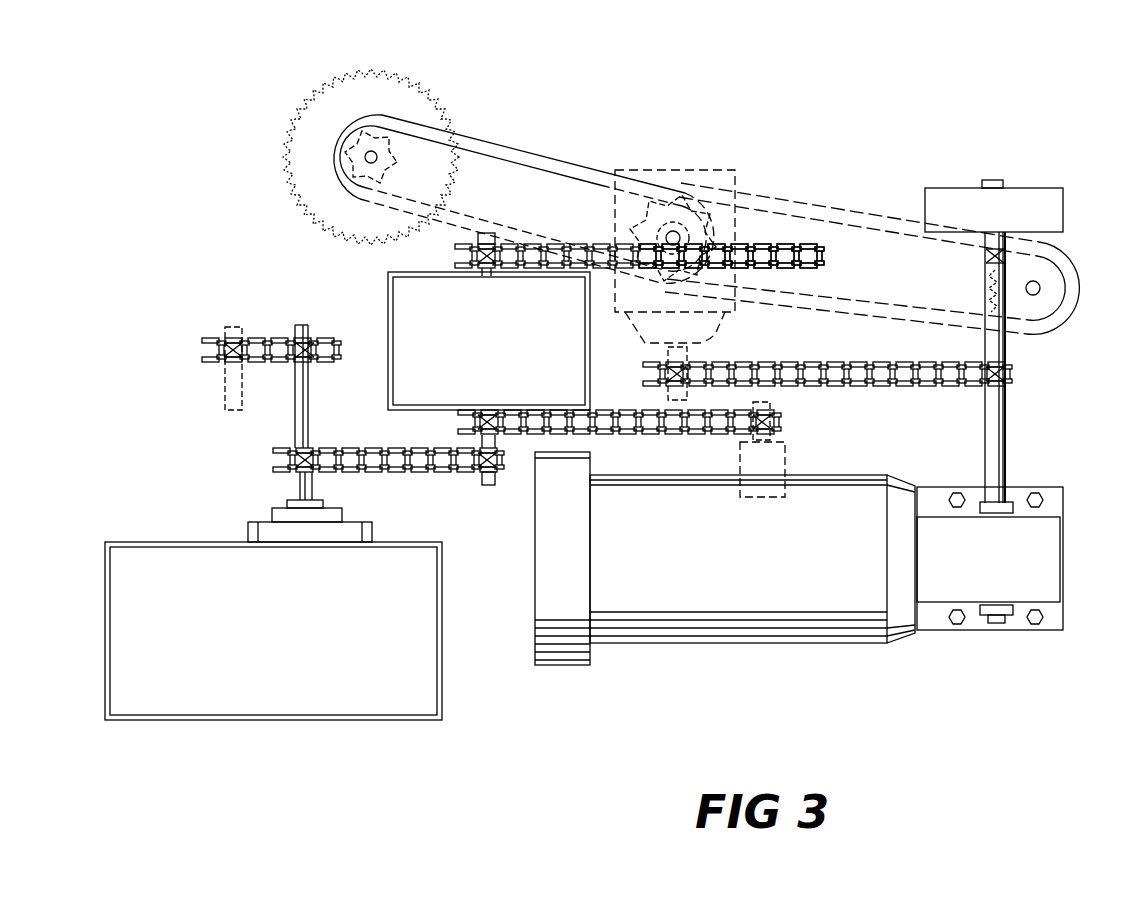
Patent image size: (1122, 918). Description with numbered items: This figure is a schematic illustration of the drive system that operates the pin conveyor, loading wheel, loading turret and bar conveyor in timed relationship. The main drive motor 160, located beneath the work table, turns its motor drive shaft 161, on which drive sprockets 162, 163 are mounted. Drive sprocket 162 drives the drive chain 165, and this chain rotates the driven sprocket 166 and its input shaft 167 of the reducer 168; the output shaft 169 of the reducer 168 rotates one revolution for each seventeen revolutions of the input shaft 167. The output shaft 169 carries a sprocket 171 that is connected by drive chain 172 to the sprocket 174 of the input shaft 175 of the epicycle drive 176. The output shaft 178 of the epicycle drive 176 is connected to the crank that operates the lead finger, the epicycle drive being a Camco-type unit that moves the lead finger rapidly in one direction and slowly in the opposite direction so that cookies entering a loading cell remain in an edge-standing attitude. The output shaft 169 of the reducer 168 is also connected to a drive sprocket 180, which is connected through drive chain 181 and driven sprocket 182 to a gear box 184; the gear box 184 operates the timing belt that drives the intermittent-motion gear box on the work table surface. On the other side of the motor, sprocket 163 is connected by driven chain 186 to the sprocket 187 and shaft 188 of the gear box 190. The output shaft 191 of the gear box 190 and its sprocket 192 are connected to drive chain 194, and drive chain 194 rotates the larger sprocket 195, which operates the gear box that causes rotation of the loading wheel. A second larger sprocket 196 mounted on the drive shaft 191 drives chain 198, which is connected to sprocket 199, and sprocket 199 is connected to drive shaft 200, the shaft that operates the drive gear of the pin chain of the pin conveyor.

The main drive motor 160 is at (765, 640).
The motor drive shaft 161 is at (1010, 440).
The drive sprocket 162 is at (985, 262).
The drive sprocket 163 is at (990, 386).
The drive chain 165 is at (800, 268).
The driven sprocket 166 is at (495, 245).
The input shaft 167 is at (490, 233).
The reducer 168 is at (410, 312).
The output shaft 169 is at (488, 485).
The sprocket 171 is at (495, 468).
The drive chain 172 is at (388, 472).
The sprocket 174 is at (312, 455).
The input shaft 175 is at (300, 484).
The epicycle drive 176 is at (195, 540).
The output shaft 178 is at (305, 400).
The drive sprocket 180 is at (492, 420).
The drive chain 181 is at (620, 434).
The driven sprocket 182 is at (765, 425).
The gear box 184 is at (780, 462).
The driven chain 186 is at (800, 362).
The sprocket 187 is at (665, 385).
The shaft 188 is at (700, 348).
The gear box 190 is at (650, 170).
The output shaft 191 is at (700, 210).
The sprocket 192 is at (675, 230).
The drive chain 194 is at (490, 148).
The larger sprocket 195 is at (425, 106).
The second larger sprocket 196 is at (745, 193).
The chain 198 is at (810, 200).
The sprocket 199 is at (1060, 315).
The drive shaft 200 is at (1040, 285).